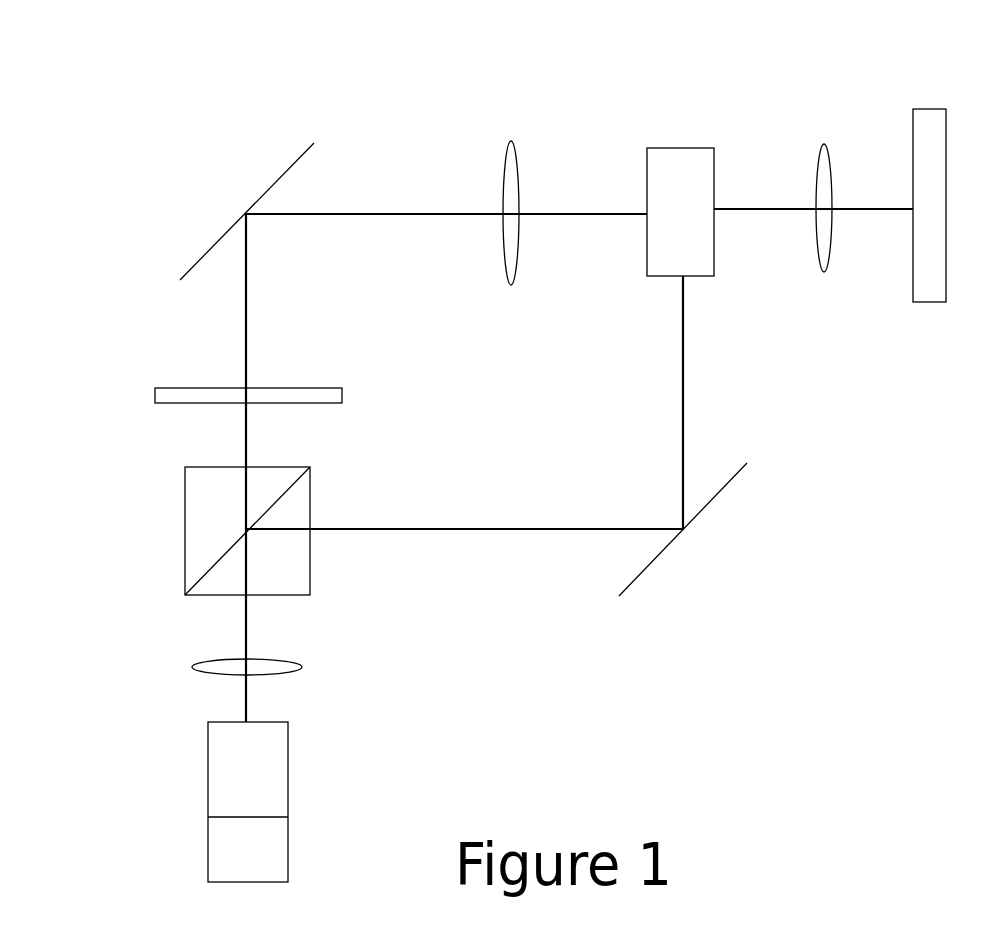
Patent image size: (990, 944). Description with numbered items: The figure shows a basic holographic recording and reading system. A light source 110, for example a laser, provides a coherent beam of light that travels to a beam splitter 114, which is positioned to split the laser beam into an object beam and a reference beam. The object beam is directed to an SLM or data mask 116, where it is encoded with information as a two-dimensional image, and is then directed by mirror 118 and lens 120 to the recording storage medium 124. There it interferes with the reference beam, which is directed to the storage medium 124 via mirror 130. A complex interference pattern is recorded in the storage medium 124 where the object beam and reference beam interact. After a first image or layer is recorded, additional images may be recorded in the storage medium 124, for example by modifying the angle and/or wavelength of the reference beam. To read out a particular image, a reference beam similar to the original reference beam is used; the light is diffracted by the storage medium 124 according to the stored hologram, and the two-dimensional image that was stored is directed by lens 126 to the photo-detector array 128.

The light source 110 is at (207, 774).
The beam splitter 114 is at (185, 532).
The data mask 116 is at (155, 395).
The mirror 118 is at (200, 262).
The lens 120 is at (510, 142).
The storage medium 124 is at (647, 146).
The lens 126 is at (820, 143).
The photo-detector array 128 is at (923, 110).
The mirror 130 is at (637, 578).